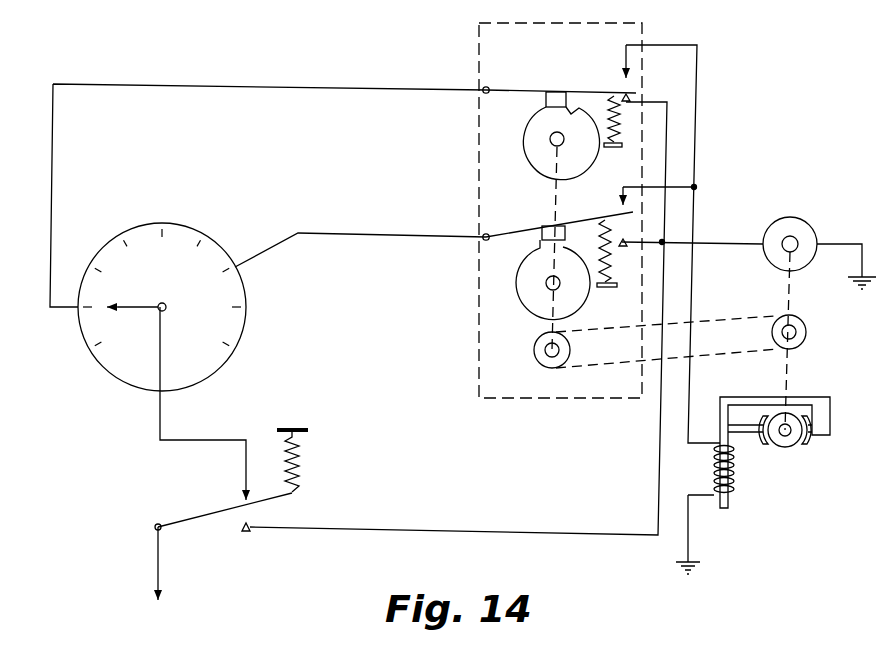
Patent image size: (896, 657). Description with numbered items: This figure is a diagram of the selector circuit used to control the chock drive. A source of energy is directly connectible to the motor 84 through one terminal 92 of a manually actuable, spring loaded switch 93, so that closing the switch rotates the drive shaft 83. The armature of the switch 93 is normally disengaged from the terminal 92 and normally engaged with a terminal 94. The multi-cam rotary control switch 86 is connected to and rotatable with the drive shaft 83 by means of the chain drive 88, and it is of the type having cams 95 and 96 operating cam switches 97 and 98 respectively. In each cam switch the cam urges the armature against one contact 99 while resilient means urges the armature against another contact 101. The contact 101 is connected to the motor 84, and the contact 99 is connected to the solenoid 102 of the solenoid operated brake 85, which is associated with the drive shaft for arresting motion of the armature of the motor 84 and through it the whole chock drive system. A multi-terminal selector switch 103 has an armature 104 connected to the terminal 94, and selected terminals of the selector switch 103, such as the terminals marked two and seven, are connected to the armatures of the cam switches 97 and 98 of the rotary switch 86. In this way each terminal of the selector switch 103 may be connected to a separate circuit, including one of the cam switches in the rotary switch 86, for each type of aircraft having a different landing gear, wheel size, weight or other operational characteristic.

The drive shaft 83 is at (786, 287).
The motor 84 is at (777, 232).
The solenoid operated brake 85 is at (792, 449).
The multi-cam rotary control switch 86 is at (478, 160).
The chain drive 88 is at (606, 368).
The terminal 92 is at (250, 533).
The switch 93 is at (200, 512).
The terminal 94 is at (254, 491).
The cam 95 is at (533, 153).
The cam 96 is at (528, 301).
The cam switch 97 is at (574, 86).
The cam switch 98 is at (577, 211).
The contact 99 is at (618, 62).
The contact 101 is at (632, 106).
The solenoid 102 is at (732, 486).
The multi-terminal selector switch 103 is at (148, 222).
The armature 104 is at (130, 303).